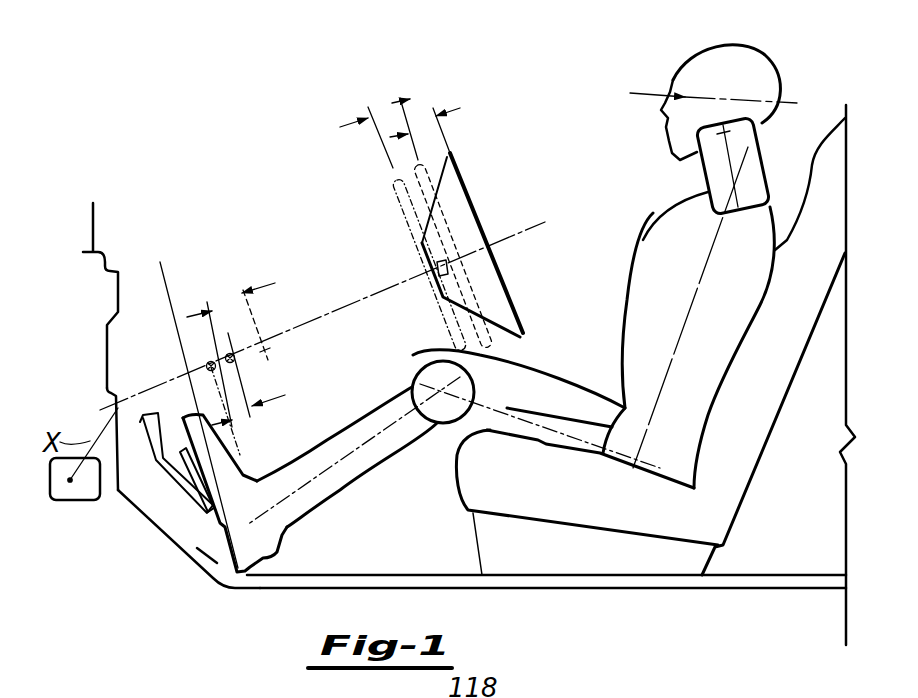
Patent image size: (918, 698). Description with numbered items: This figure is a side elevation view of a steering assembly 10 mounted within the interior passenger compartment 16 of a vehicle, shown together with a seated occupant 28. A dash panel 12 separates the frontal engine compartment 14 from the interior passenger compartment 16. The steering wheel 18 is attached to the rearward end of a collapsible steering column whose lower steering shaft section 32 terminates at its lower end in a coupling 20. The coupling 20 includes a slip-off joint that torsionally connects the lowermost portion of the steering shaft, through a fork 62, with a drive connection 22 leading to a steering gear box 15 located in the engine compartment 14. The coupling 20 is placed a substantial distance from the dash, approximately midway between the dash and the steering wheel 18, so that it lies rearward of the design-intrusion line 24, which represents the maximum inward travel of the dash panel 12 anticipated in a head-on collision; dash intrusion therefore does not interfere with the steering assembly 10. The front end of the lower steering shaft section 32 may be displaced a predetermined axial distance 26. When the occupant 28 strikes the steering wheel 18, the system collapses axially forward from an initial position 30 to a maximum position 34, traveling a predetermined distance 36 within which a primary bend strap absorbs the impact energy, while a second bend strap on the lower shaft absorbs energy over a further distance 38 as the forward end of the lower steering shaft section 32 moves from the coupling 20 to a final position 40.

The steering assembly 10 is at (257, 158).
The dash panel 12 is at (100, 352).
The engine compartment 14 is at (58, 393).
The steering gear box 15 is at (67, 502).
The interior passenger compartment 16 is at (410, 527).
The steering wheel 18 is at (474, 193).
The coupling 20 is at (235, 360).
The drive connection 22 is at (148, 393).
The design-intrusion line 24 is at (167, 281).
The predetermined axial distance 26 is at (217, 309).
The occupant 28 is at (652, 222).
The initial position 30 is at (436, 108).
The lower steering shaft section 32 is at (300, 327).
The maximum position 34 is at (395, 100).
The predetermined distance 36 is at (410, 137).
The predetermined distance 38 is at (378, 117).
The final position 40 is at (208, 364).
The fork 62 is at (118, 410).